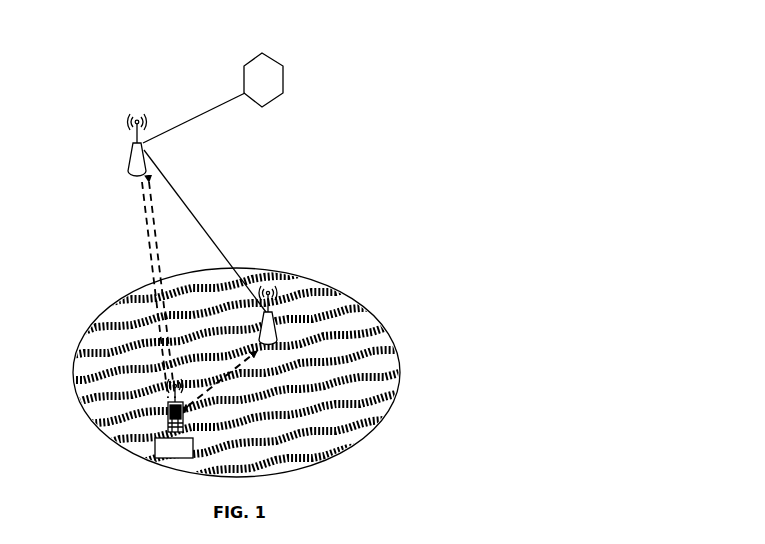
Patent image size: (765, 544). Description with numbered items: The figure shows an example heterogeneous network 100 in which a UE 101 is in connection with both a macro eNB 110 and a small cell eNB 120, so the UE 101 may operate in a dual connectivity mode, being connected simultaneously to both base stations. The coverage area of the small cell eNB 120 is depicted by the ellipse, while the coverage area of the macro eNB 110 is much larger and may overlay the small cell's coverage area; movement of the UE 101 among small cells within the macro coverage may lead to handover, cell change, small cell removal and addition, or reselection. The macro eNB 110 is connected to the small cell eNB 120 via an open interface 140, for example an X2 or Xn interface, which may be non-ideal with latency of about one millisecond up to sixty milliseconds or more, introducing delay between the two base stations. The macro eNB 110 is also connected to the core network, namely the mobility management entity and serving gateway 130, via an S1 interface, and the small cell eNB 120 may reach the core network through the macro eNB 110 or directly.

The heterogeneous network 100 is at (417, 60).
The UE 101 is at (199, 452).
The macro eNB 110 is at (118, 134).
The small cell eNB 120 is at (293, 318).
The mobility management entity (MME) and serving gateway (S-GW) 130 is at (247, 52).
The open interface 140 is at (234, 207).